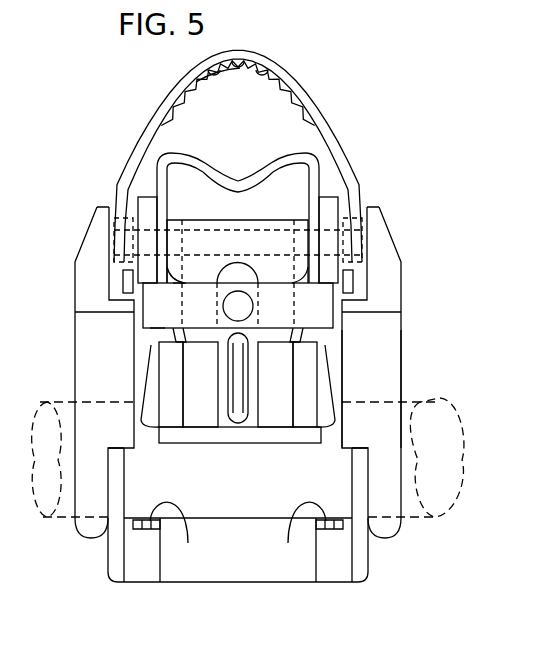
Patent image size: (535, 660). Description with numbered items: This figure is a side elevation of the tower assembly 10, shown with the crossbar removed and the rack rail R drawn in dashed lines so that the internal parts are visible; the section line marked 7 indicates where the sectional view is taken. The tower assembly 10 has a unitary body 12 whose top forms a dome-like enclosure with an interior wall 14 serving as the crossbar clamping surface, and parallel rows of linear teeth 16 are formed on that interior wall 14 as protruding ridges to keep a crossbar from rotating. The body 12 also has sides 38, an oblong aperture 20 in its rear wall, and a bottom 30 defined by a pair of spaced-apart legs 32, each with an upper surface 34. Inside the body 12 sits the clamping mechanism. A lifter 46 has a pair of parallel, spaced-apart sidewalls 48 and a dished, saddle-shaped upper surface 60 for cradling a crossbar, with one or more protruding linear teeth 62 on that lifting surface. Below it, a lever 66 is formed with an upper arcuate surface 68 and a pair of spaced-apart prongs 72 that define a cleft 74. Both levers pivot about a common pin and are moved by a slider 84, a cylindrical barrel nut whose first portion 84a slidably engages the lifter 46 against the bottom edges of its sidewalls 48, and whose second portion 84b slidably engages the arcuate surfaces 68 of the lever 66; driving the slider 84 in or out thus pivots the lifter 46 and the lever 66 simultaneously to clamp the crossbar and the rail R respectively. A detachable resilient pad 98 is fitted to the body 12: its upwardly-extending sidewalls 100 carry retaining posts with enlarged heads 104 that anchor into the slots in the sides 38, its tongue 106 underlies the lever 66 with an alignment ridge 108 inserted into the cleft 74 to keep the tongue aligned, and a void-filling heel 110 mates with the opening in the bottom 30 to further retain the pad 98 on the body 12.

The tower assembly 10 is at (134, 73).
The body 12 is at (153, 116).
The interior wall 14 is at (278, 68).
The linear teeth 16 is at (294, 99).
The oblong aperture 20 is at (241, 102).
The sides 38 is at (122, 162).
The section line 7- 7 is at (98, 133).
The lifter 46 is at (208, 177).
The upper surface 60 is at (242, 183).
The linear teeth 62 is at (283, 165).
The sidewalls 48 is at (164, 191).
The sidewalls 100 is at (380, 244).
The slider 84 is at (153, 313).
The first portion 84a is at (170, 283).
The second portion 84b is at (157, 337).
The enlarged head 104 is at (348, 281).
The pad 98 is at (370, 323).
The cleft 74 is at (257, 358).
The alignment ridge 108 is at (237, 412).
The upper arcuate surface 68 is at (210, 387).
The tongue 106 is at (327, 378).
The prongs 72 is at (196, 407).
The lever 66 is at (198, 428).
The rails R is at (252, 457).
The legs 32 is at (142, 549).
The heel 110 is at (252, 562).
The upper surface 34 is at (238, 542).
The bottom 30 is at (170, 595).